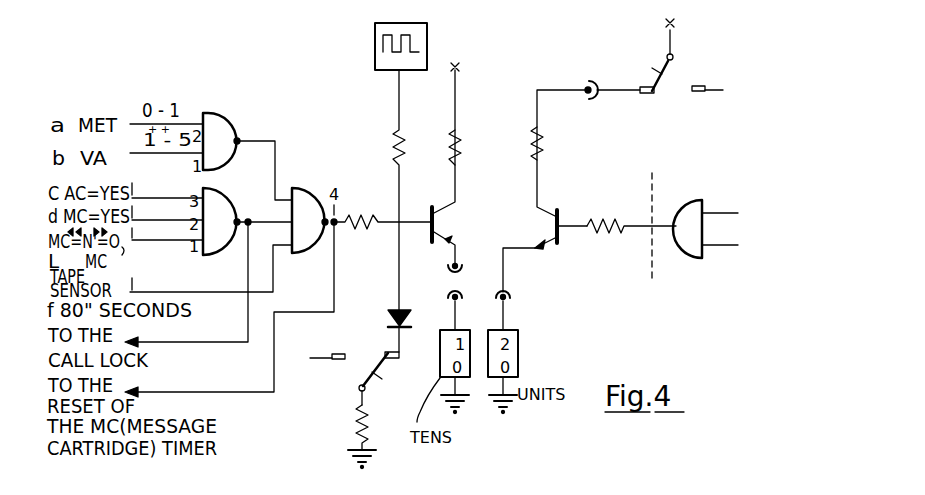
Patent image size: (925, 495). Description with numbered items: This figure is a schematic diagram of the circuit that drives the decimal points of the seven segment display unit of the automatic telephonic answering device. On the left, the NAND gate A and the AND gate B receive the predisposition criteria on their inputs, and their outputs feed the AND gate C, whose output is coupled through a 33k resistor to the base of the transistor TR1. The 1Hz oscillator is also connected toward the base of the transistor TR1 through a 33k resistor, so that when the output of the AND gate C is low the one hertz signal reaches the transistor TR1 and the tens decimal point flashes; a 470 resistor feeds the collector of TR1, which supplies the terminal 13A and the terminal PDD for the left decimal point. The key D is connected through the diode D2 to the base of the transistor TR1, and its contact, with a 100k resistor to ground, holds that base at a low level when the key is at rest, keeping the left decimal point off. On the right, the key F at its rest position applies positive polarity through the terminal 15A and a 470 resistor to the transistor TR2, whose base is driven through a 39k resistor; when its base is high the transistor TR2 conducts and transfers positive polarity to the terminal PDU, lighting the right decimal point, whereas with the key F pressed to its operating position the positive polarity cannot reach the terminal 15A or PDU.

The NAND gate A is at (225, 141).
The AND gate B is at (230, 221).
The AND gate C is at (304, 222).
The transistor TR1 is at (463, 163).
The transistor TR2 is at (571, 206).
The diode D2 is at (386, 313).
The key D is at (354, 374).
The key F is at (673, 70).
The terminal 13A is at (431, 280).
The terminal 15A is at (585, 74).
The terminal PDD is at (427, 307).
The terminal PDU is at (525, 289).
The oscillator 1Hz is at (401, 35).
The 33k resistors 33k is at (386, 190).
The 470 ohm resistors 470 is at (511, 146).
The 39k resistor 39k is at (631, 239).
The 100k resistor 100k is at (340, 427).